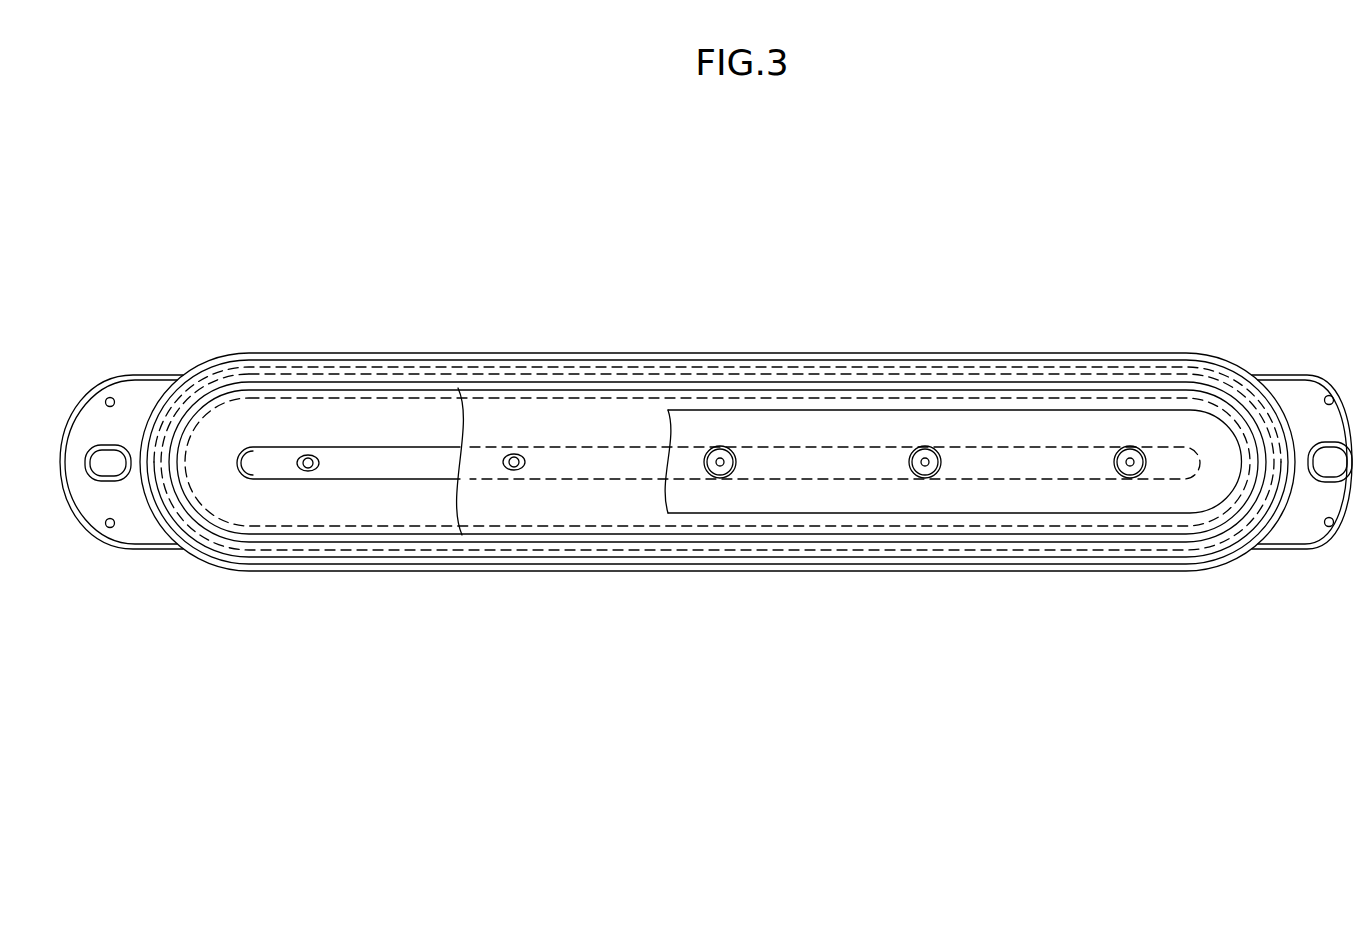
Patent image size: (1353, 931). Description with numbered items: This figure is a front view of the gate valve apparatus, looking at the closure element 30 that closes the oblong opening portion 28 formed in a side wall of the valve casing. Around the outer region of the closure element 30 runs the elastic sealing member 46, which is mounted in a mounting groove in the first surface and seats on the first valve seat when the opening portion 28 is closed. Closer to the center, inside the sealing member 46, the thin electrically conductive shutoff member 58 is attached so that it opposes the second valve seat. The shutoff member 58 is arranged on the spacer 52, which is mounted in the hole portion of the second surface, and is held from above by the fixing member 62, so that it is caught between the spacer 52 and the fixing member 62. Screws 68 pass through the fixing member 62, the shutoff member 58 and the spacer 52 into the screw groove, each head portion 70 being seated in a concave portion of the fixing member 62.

The opening portion 28 is at (1245, 362).
The closure element 30 is at (620, 315).
The sealing member 46 is at (1280, 460).
The spacer 52 is at (822, 478).
The shutoff member 58 is at (1252, 465).
The fixing member 62 is at (1163, 502).
The screw 68 is at (925, 462).
The head portion 70 is at (720, 448).